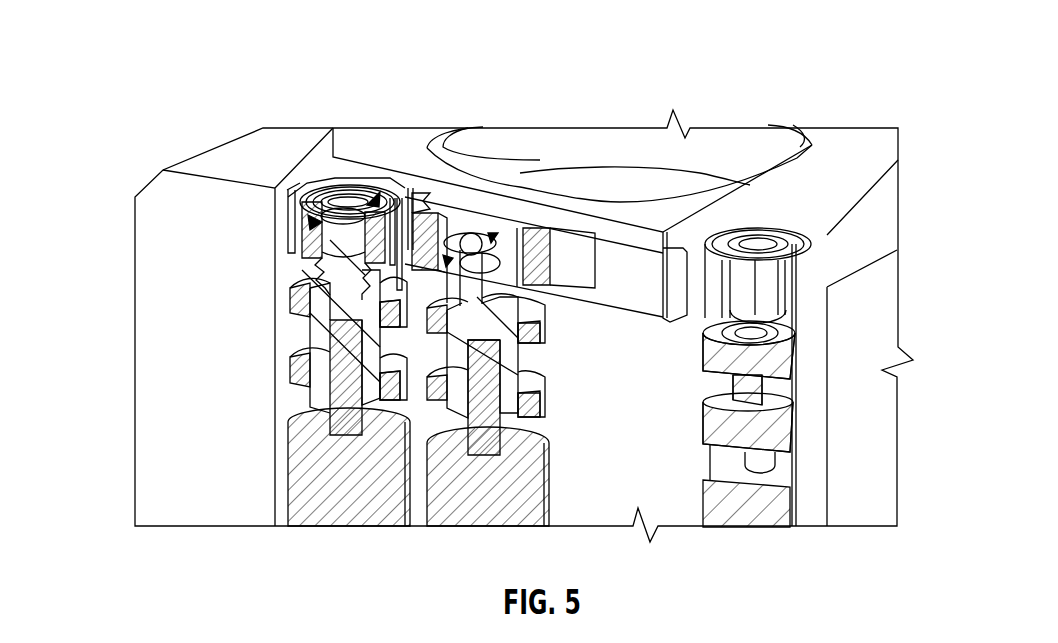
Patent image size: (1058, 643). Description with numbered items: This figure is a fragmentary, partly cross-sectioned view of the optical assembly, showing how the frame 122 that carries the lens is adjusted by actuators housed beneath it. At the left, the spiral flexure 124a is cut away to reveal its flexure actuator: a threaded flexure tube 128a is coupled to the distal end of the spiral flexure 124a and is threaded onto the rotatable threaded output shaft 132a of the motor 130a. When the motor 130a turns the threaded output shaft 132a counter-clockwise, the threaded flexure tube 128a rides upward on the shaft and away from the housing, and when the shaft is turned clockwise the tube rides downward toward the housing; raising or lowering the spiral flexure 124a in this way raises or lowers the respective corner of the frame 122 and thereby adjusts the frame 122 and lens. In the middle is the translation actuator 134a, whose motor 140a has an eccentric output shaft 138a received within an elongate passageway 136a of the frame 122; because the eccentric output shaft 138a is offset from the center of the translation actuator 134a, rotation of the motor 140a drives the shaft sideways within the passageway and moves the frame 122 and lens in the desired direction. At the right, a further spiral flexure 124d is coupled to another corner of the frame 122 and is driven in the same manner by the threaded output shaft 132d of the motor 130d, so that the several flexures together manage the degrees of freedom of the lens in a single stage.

The frame 122 is at (842, 193).
The spiral flexure 124a is at (290, 222).
The threaded flexure tube 128a is at (310, 200).
The threaded output shaft 132a is at (338, 253).
The translation actuator 134a is at (468, 533).
The motor 130a is at (300, 443).
The elongate passageway 136a is at (447, 217).
The eccentric output shaft 138a is at (470, 237).
The motor 140a is at (512, 526).
The threaded output shaft 132d is at (762, 243).
The spiral flexure 124d is at (764, 297).
The motor 130d is at (767, 513).